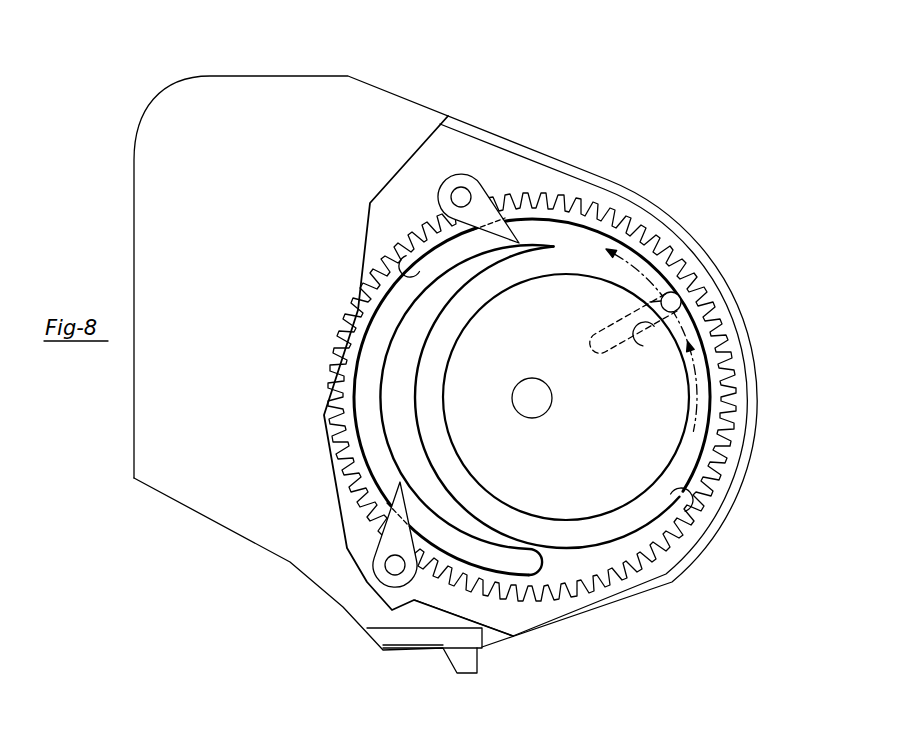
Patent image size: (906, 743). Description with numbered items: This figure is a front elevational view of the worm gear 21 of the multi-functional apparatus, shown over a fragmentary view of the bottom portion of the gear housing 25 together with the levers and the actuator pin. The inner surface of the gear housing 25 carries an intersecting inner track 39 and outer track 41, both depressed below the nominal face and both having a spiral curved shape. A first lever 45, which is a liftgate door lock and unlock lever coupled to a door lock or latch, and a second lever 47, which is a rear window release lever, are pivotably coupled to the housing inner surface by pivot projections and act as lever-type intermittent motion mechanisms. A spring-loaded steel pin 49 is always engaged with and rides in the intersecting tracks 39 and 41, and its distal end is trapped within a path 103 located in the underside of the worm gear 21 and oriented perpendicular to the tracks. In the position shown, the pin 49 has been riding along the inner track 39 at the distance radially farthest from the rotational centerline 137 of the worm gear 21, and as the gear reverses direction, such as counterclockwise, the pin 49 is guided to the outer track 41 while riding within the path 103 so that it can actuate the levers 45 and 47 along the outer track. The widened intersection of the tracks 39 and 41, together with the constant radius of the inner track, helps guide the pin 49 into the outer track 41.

The worm gear 21 is at (735, 380).
The gear housing 25 is at (754, 455).
The inner track 39 is at (700, 518).
The outer track 41 is at (392, 252).
The first lever 45 is at (466, 188).
The second lever 47 is at (387, 582).
The pin 49 is at (670, 292).
The path 103 is at (660, 347).
The rotational centerline 137 is at (533, 400).